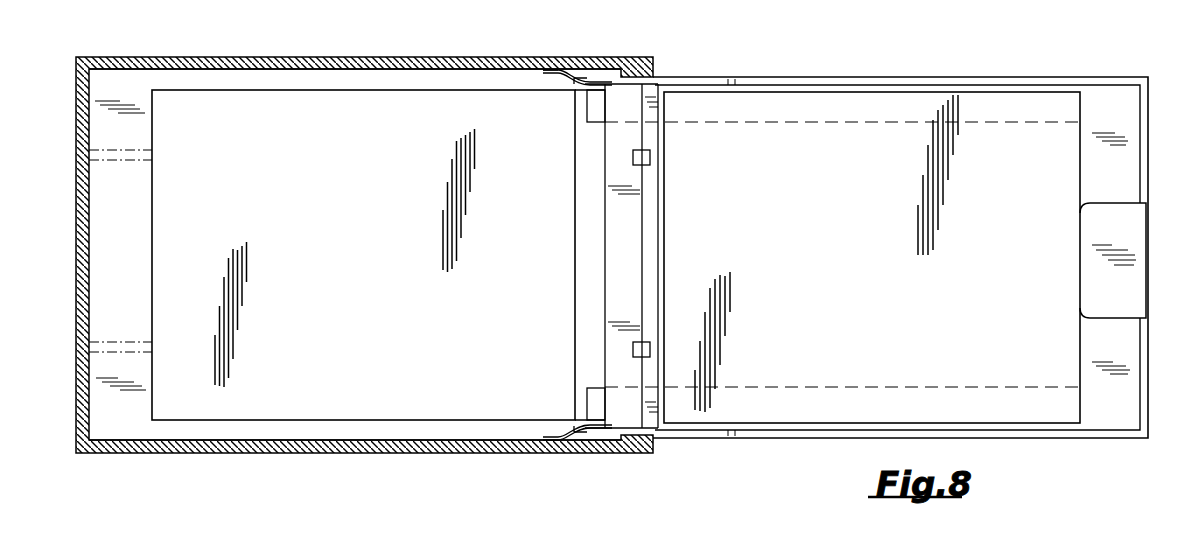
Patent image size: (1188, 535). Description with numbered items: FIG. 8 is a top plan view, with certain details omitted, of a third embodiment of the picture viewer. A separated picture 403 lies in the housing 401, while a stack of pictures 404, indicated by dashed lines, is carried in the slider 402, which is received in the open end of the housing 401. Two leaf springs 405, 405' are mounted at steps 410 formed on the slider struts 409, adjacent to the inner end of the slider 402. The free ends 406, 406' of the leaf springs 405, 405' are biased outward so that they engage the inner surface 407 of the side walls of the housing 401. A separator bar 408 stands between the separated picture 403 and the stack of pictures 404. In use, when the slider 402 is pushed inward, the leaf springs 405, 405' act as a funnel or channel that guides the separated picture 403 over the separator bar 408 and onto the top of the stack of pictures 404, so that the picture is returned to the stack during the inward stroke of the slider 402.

The housing 401 is at (330, 56).
The slider 402 is at (845, 76).
The separated picture 403 is at (367, 261).
The stack of pictures 404 is at (860, 264).
The leaf spring 405 is at (562, 112).
The leaf spring 405' is at (553, 399).
The free end of leaf spring 406 is at (525, 102).
The free end of leaf spring 406' is at (516, 411).
The inner surface of housing side walls 407 is at (290, 72).
The separator bar 408 is at (633, 228).
The slider struts 409 is at (766, 88).
The steps of slider struts 410 is at (593, 80).